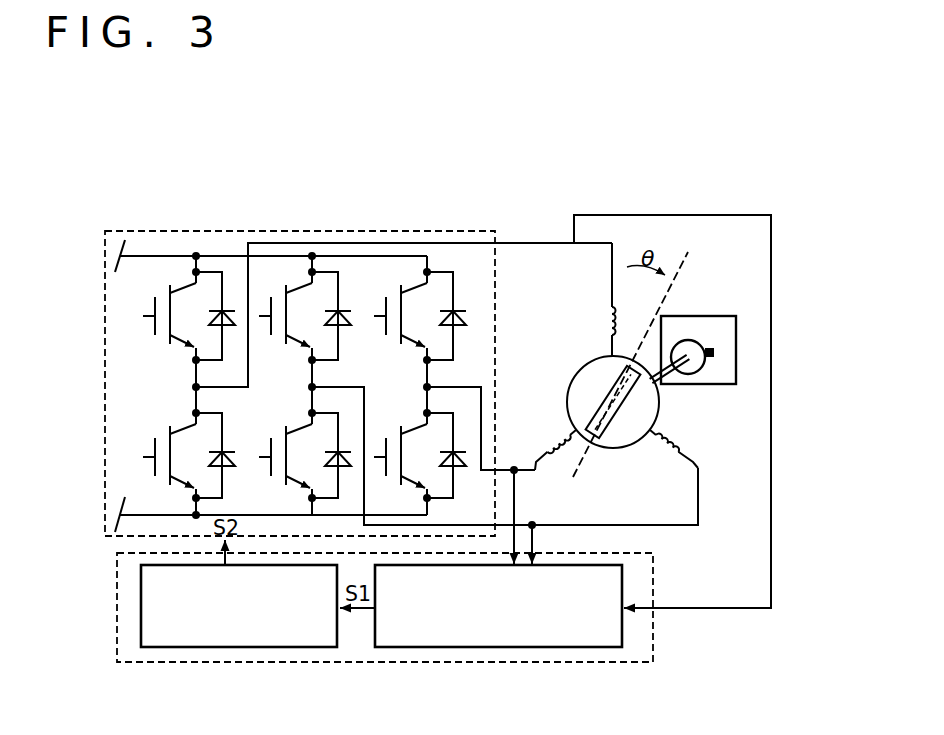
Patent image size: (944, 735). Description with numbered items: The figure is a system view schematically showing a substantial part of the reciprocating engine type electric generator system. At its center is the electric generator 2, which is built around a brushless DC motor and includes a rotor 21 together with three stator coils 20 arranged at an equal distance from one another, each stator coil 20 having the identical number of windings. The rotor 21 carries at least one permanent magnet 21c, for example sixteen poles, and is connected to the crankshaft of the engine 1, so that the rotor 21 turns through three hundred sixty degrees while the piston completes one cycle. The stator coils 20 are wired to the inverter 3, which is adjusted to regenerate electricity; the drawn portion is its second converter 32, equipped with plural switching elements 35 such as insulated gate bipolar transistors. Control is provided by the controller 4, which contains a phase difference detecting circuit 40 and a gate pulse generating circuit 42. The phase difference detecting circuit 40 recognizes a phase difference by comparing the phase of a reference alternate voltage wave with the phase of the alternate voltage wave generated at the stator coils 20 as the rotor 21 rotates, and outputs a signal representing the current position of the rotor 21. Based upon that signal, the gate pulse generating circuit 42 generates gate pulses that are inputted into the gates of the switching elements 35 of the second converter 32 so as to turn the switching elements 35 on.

The engine 1 is at (694, 316).
The electric generator 2 is at (578, 372).
The inverter 3 is at (148, 228).
The controller 4 is at (377, 662).
The stator coil 20 is at (607, 325).
The rotor 21 is at (622, 405).
The permanent magnet 21c is at (616, 437).
The second converter 32 is at (183, 231).
The switching element 35 is at (178, 349).
The phase difference detecting circuit 40 is at (547, 648).
The gate pulse generating circuit 42 is at (231, 648).